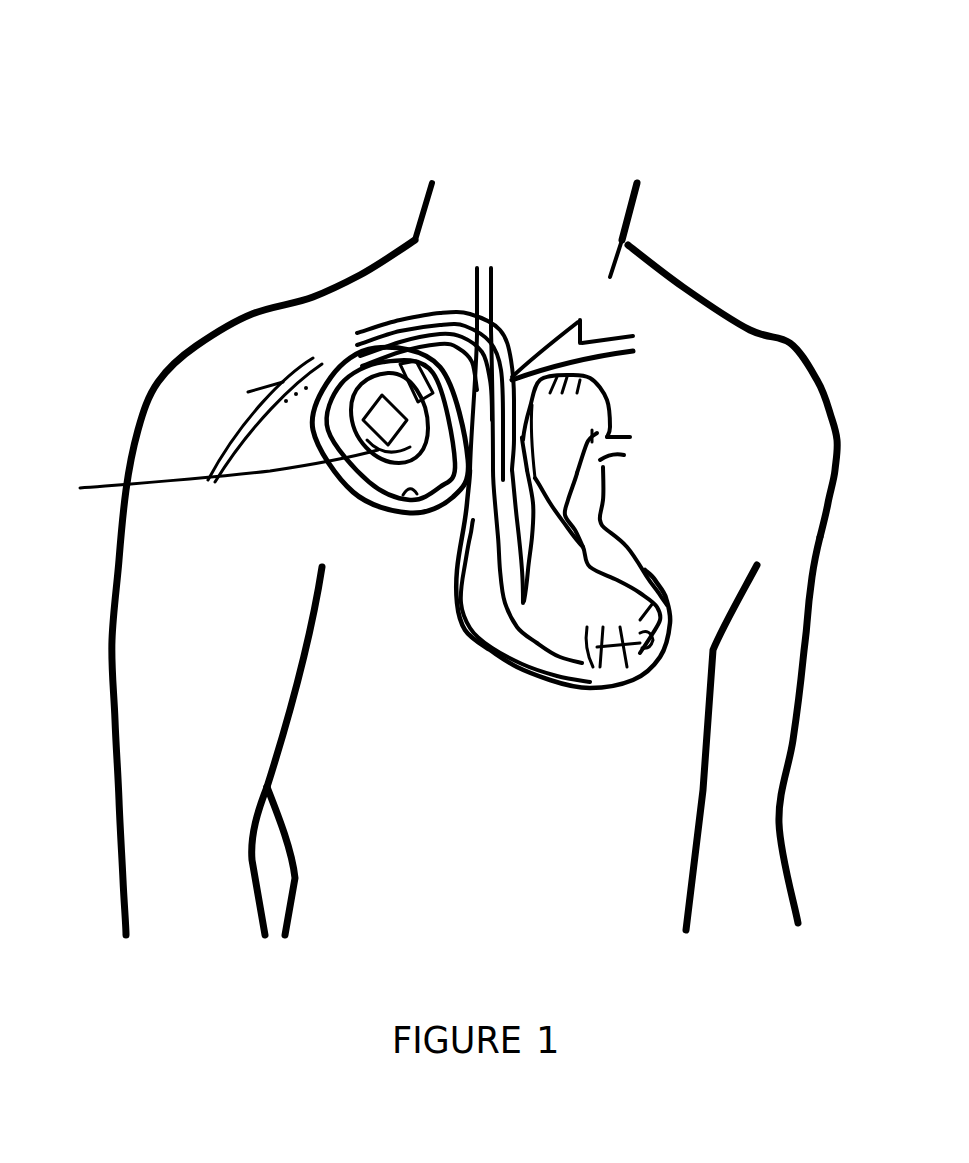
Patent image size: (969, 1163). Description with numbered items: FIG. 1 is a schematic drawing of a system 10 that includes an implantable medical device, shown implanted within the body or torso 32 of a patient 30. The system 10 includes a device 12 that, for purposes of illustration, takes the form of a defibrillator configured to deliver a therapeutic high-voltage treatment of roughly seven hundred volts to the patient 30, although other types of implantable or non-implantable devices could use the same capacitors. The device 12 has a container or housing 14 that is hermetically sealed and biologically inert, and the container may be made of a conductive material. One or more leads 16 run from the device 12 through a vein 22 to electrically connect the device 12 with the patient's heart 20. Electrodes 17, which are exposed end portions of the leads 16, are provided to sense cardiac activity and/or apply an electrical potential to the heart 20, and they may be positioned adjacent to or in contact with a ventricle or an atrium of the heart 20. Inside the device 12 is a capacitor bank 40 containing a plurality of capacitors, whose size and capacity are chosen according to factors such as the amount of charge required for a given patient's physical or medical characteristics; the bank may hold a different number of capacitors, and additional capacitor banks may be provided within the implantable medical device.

The system 10 is at (420, 258).
The device 12 is at (333, 476).
The housing 14 is at (377, 465).
The leads 16 is at (408, 510).
The electrodes 17 is at (647, 577).
The heart 20 is at (602, 687).
The vein 22 is at (327, 370).
The patient 30 is at (554, 140).
The body or torso 32 is at (792, 343).
The capacitor bank 40 is at (211, 476).